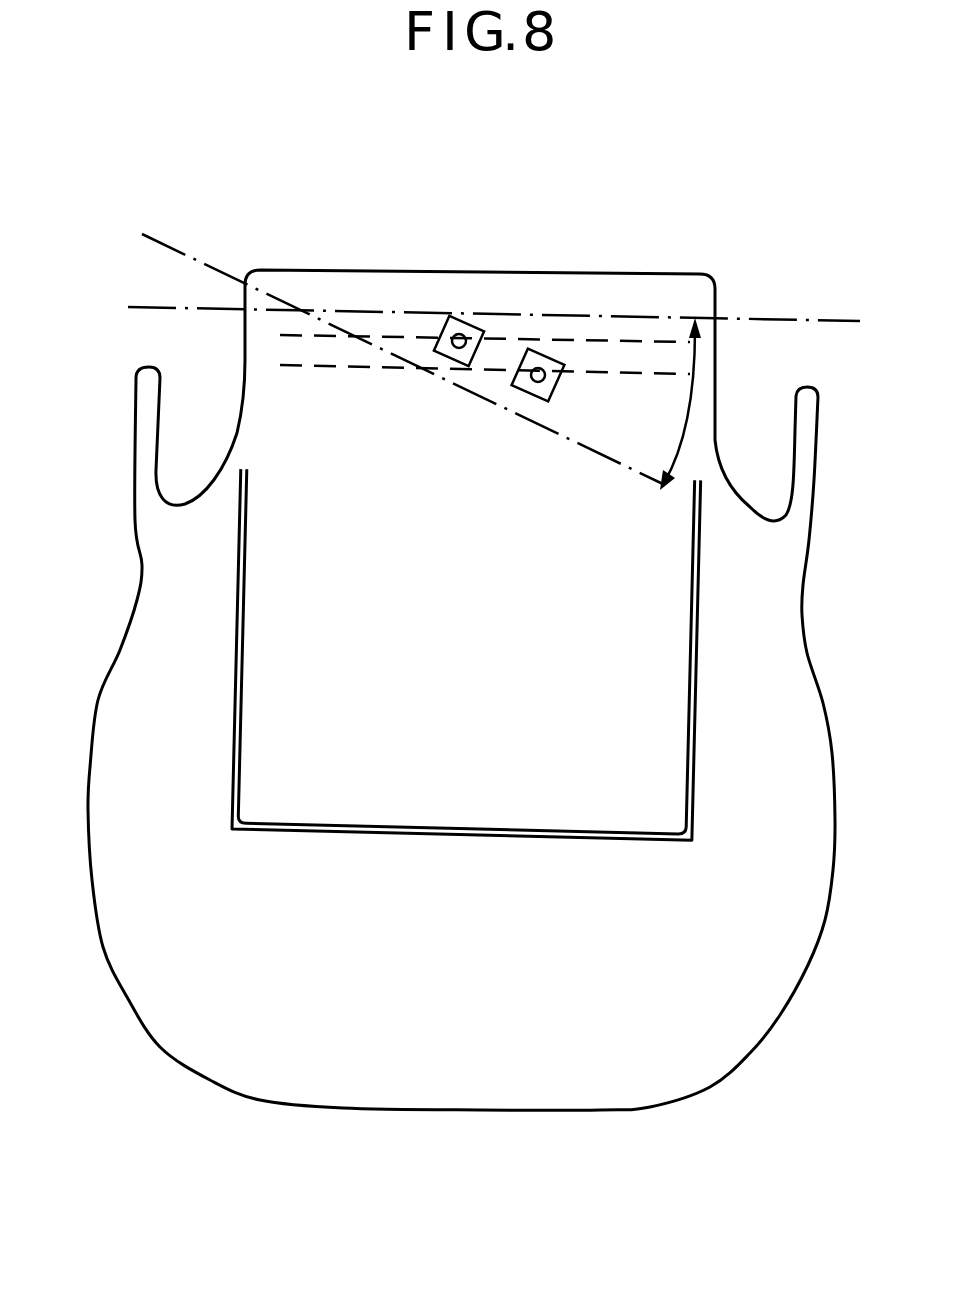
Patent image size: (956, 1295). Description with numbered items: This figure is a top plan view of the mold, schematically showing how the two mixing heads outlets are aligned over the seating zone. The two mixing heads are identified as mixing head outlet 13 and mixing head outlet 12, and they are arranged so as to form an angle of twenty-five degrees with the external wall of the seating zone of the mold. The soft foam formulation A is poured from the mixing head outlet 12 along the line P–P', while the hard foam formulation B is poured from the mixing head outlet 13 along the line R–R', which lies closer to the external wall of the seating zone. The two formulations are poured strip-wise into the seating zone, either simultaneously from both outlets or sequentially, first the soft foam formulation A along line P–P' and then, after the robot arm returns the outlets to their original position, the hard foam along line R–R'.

The mixing head outlet 12 is at (545, 367).
The mixing head outlet 13 is at (470, 333).
The line R–R' R is at (475, 326).
The line P–P' P is at (475, 355).
The soft foam formulation A is at (466, 654).